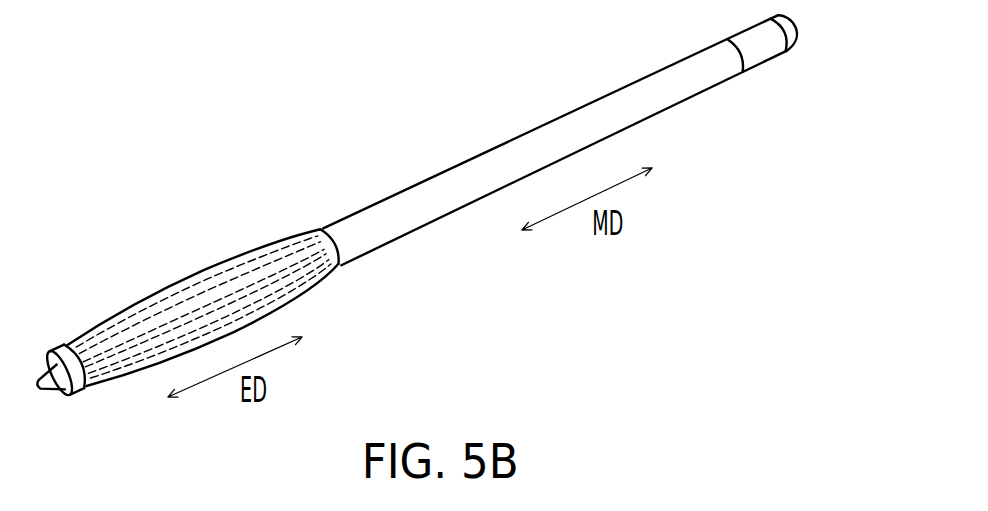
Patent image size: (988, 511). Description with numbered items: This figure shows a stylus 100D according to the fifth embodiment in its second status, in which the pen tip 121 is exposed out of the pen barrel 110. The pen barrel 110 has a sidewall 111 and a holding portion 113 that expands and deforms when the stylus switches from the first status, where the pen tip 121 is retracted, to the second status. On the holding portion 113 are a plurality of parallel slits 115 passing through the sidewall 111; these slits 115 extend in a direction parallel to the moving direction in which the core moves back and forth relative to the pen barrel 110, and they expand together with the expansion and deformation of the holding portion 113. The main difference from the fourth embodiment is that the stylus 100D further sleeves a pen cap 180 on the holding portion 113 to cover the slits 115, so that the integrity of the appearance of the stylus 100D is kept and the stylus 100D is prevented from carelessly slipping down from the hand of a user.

The stylus 100D is at (817, 394).
The pen barrel 110 is at (590, 72).
The sidewall 111 is at (488, 173).
The holding portion 113 is at (128, 322).
The slits 115 is at (250, 292).
The pen tip 121 is at (46, 382).
The pen cap 180 is at (294, 234).